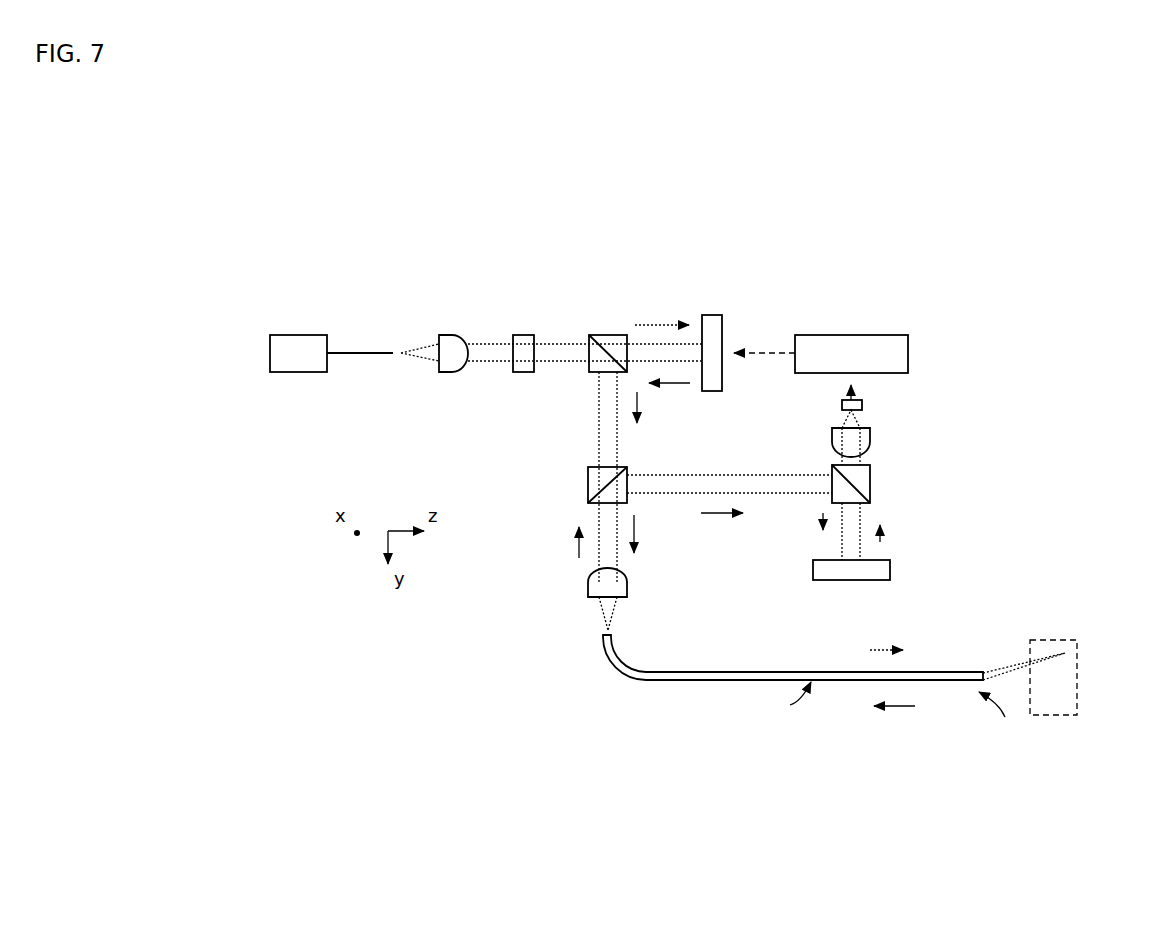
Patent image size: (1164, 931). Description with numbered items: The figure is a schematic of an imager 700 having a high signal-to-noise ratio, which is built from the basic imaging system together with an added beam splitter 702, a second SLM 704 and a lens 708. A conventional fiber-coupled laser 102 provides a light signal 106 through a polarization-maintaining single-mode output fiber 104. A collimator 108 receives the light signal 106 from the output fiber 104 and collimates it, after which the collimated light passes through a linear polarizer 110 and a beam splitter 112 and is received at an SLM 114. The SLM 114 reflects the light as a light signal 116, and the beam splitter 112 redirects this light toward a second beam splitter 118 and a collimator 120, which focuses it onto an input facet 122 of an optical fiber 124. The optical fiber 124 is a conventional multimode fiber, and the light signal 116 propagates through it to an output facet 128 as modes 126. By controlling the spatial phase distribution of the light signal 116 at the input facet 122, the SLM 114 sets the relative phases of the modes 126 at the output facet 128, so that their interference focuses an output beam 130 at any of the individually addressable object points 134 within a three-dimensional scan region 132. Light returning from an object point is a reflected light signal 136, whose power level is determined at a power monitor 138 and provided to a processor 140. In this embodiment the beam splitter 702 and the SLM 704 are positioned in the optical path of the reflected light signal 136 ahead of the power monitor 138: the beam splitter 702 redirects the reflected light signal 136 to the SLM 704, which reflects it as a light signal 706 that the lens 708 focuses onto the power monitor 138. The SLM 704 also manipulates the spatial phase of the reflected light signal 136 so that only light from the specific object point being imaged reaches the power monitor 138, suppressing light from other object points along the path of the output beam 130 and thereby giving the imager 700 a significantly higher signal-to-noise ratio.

The imager 700 is at (258, 226).
The laser 102 is at (288, 377).
The output fiber 104 is at (363, 352).
The light signal 106 is at (404, 366).
The collimator 108 is at (448, 375).
The linear polarizer 110 is at (523, 375).
The beam splitter 112 is at (607, 335).
The SLM 114 is at (710, 315).
The light signal 116 is at (675, 383).
The beam splitter 118 is at (588, 483).
The collimator 120 is at (588, 592).
The input facet 122 is at (619, 626).
The optical fiber 124 is at (785, 672).
The modes 126 is at (779, 704).
The output facet 128 is at (998, 720).
The output beam 130 is at (997, 657).
The scan region 132 is at (1065, 640).
The object points 134 is at (1061, 703).
The reflected light signal 136 is at (570, 540).
The power monitor 138 is at (862, 405).
The processor 140 is at (852, 335).
The beam splitter 702 is at (870, 480).
The SLM 704 is at (890, 570).
The light signal 706 is at (882, 535).
The lens 708 is at (870, 437).